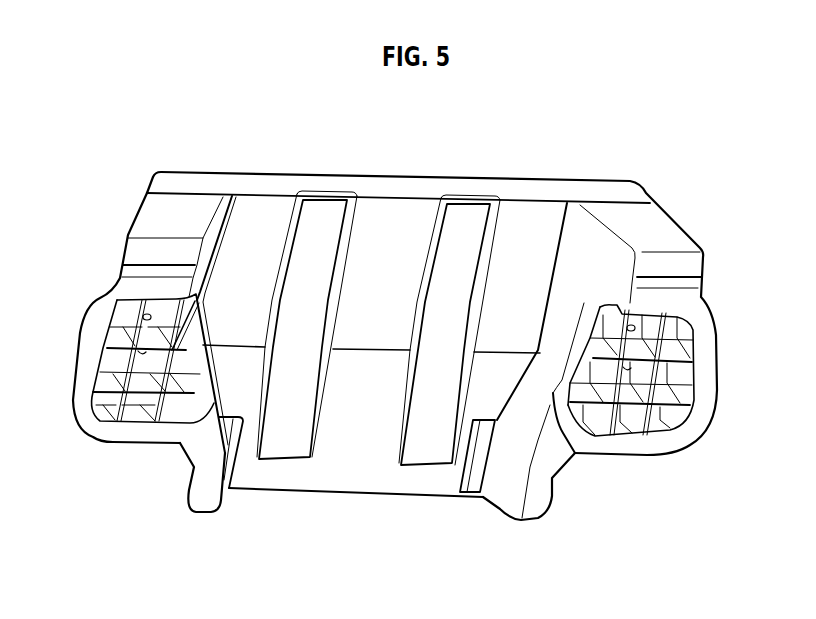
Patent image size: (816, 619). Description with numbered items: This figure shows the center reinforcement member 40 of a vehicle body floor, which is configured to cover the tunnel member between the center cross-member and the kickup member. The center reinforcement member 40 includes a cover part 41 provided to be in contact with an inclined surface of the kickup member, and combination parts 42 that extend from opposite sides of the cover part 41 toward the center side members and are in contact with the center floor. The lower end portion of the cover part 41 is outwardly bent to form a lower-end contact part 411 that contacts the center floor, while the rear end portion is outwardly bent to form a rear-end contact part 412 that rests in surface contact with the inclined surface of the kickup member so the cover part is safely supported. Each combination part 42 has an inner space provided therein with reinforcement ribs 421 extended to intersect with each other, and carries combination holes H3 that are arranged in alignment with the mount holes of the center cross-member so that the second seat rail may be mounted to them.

The center reinforcement member 40 is at (458, 176).
The cover part 41 is at (388, 270).
The rear-end contact part 412 is at (257, 185).
The lower-end contact part 411 is at (200, 477).
The combination part 42 is at (590, 373).
The reinforcement ribs 421 is at (617, 396).
The combination holes H3 is at (145, 317).